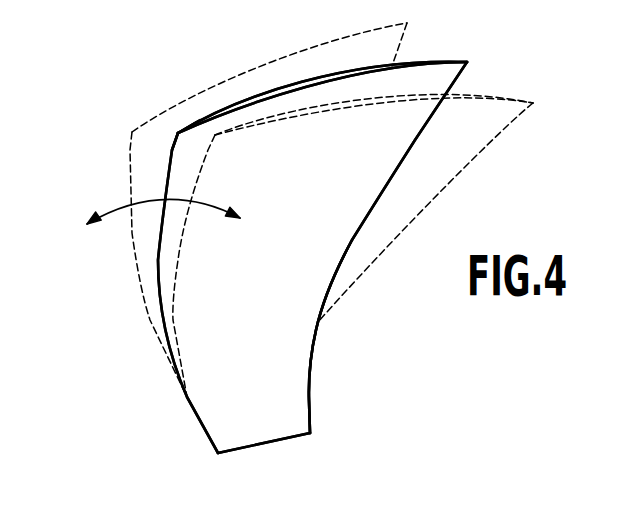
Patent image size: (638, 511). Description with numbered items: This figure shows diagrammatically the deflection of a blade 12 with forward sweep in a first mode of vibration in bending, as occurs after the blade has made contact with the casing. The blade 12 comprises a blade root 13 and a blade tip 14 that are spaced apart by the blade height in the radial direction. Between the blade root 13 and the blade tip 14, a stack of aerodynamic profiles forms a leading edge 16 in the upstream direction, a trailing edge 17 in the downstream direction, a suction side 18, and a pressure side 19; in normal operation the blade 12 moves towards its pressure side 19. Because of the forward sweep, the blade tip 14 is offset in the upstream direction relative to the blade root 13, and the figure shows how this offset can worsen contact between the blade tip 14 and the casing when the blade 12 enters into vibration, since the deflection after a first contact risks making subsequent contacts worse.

The blade 12 is at (102, 170).
The blade root 13 is at (267, 443).
The blade tip 14 is at (298, 78).
The leading edge 16 is at (397, 163).
The trailing edge 17 is at (158, 261).
The suction side 18 is at (287, 331).
The pressure side 19 is at (167, 140).